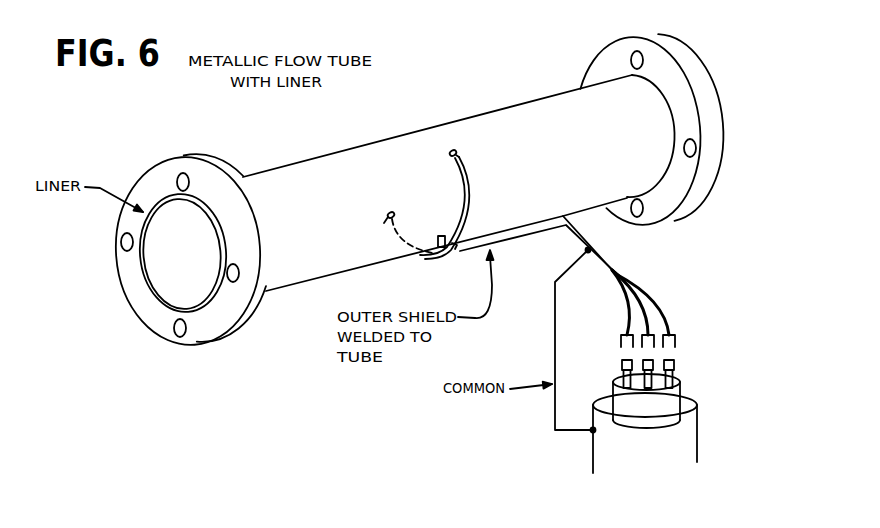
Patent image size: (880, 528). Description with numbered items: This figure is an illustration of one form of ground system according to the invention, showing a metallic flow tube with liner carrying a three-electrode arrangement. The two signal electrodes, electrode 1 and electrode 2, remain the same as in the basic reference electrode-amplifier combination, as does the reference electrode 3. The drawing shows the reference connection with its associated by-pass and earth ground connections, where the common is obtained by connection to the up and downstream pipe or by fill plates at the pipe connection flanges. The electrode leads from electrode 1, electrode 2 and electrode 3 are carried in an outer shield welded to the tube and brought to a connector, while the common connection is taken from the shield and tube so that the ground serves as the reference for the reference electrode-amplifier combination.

The electrode 1 is at (526, 266).
The electrode 2 is at (471, 292).
The electrode 3 is at (517, 312).